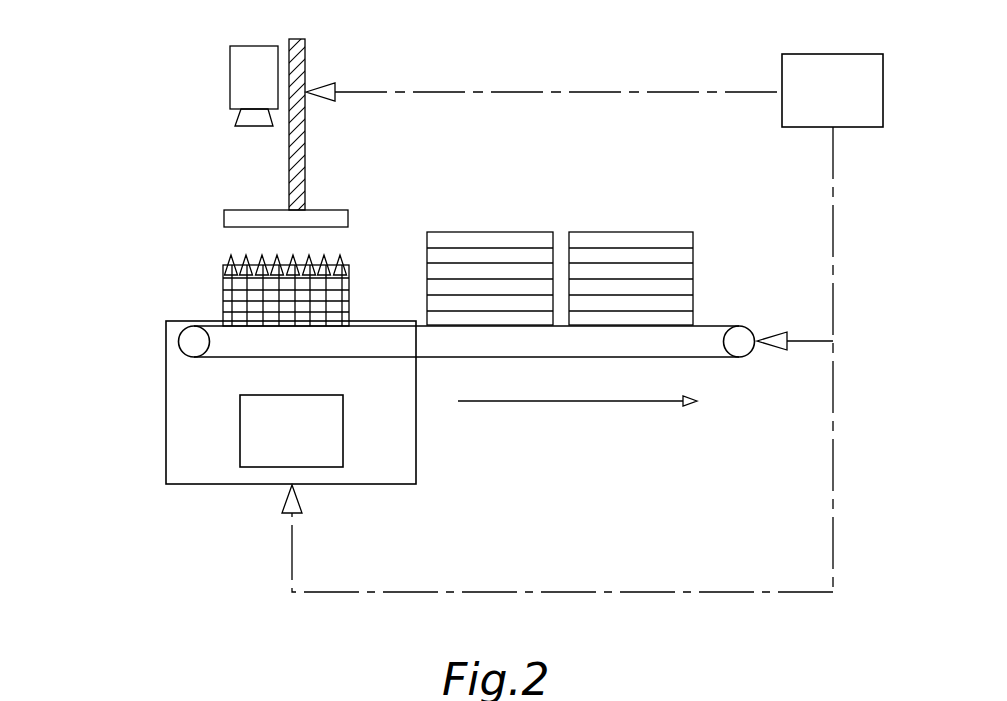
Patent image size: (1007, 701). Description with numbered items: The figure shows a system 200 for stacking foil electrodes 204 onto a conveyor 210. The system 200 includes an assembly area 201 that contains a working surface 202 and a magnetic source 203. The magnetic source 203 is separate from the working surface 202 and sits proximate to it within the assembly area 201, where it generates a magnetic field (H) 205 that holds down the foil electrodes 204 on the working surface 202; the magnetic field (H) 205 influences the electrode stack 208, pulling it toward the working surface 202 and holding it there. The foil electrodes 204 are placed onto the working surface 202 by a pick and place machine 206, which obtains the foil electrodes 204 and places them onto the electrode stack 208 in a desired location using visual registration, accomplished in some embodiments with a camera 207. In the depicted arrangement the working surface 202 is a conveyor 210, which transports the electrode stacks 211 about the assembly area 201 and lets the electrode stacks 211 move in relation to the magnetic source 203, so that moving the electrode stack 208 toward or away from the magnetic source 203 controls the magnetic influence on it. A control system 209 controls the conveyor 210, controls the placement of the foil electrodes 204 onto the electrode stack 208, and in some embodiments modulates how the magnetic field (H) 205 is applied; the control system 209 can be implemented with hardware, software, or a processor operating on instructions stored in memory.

The system 200 is at (102, 187).
The assembly area 201 is at (191, 485).
The working surface 202 is at (217, 325).
The magnetic source 203 is at (344, 409).
The foil electrodes 204 is at (224, 219).
The magnetic field (H) 205 is at (223, 291).
The pick and place machine 206 is at (289, 165).
The camera 207 is at (230, 60).
The electrode stack 208 is at (350, 295).
The control system 209 is at (884, 63).
The conveyor 210 is at (215, 358).
The electrode stacks 211 is at (493, 232).